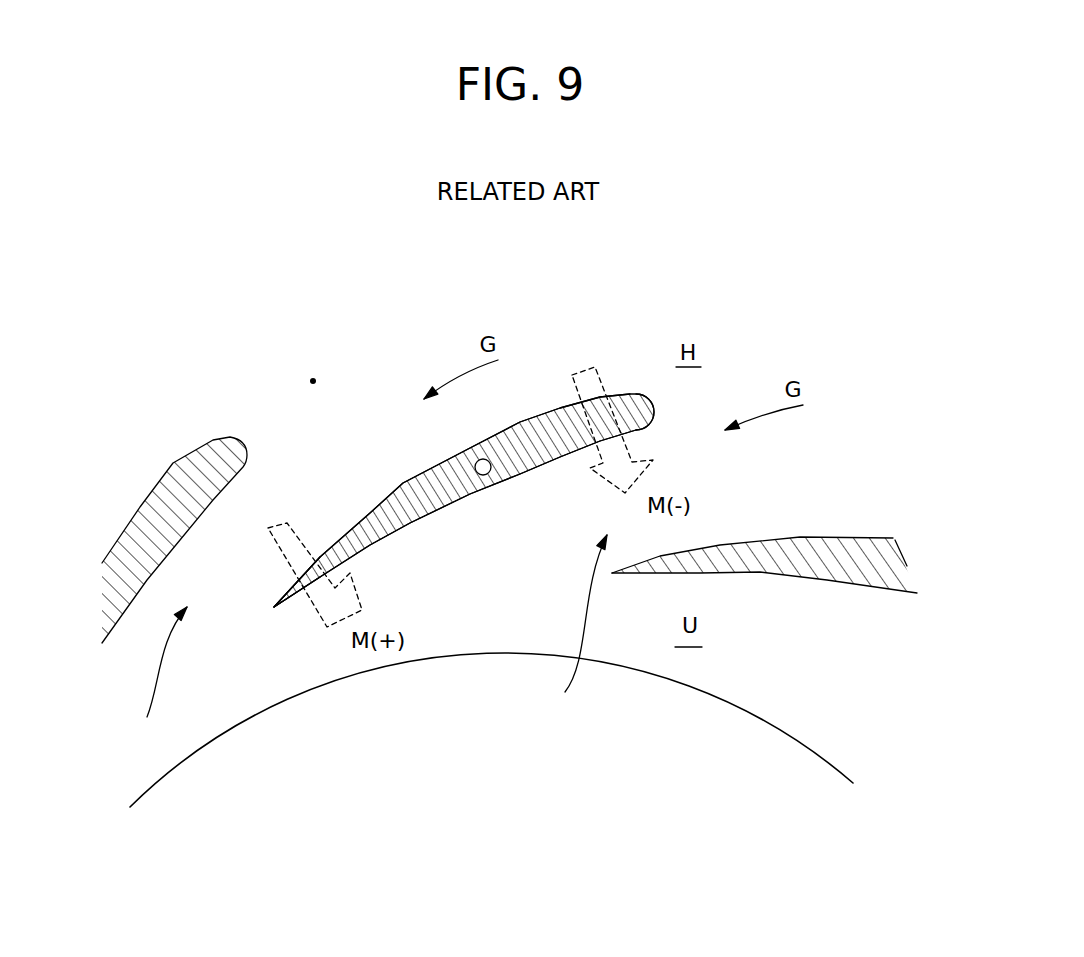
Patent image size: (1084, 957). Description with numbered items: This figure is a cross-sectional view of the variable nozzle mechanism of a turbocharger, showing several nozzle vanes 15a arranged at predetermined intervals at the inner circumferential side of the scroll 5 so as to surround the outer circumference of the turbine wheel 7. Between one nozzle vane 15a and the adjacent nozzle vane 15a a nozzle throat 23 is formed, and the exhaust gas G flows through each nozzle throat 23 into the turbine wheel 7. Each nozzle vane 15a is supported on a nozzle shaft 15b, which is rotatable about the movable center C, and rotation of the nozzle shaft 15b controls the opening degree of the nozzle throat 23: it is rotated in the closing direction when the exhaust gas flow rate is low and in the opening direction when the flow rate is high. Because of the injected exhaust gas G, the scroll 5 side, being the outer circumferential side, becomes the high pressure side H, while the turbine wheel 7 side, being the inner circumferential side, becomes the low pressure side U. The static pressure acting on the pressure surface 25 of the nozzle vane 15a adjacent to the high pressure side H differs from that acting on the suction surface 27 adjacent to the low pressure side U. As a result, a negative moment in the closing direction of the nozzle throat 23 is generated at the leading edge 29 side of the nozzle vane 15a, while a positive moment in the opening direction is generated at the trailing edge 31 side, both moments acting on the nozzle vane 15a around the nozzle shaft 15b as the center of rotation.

The scroll 5 is at (313, 380).
The turbine wheel 7 is at (198, 797).
The nozzle vane 15a is at (197, 447).
The nozzle shaft 15b is at (483, 477).
The nozzle throat 23 is at (366, 645).
The pressure surface 25 is at (403, 485).
The suction surface 27 is at (410, 527).
The leading edge 29 is at (653, 406).
The trailing edge 31 is at (273, 610).